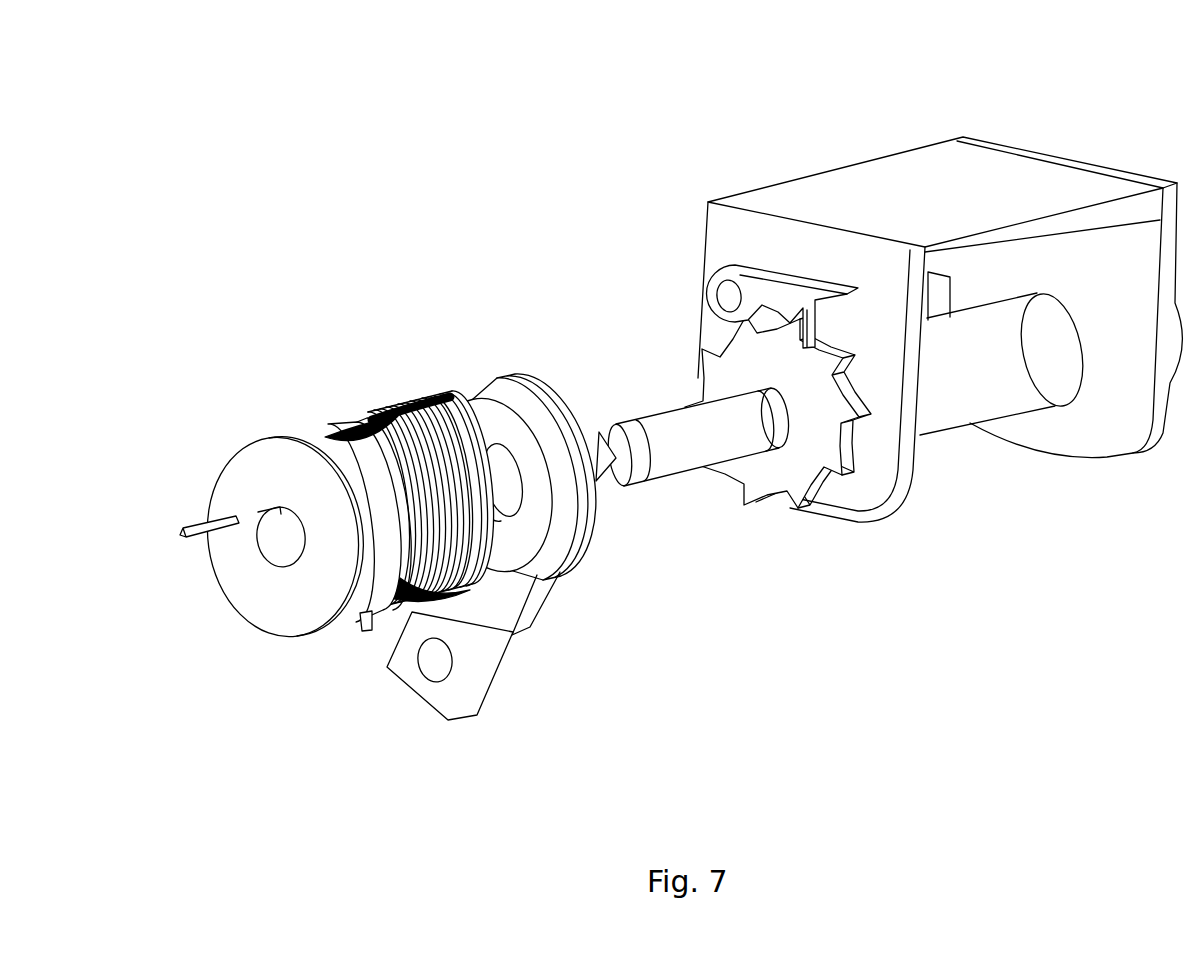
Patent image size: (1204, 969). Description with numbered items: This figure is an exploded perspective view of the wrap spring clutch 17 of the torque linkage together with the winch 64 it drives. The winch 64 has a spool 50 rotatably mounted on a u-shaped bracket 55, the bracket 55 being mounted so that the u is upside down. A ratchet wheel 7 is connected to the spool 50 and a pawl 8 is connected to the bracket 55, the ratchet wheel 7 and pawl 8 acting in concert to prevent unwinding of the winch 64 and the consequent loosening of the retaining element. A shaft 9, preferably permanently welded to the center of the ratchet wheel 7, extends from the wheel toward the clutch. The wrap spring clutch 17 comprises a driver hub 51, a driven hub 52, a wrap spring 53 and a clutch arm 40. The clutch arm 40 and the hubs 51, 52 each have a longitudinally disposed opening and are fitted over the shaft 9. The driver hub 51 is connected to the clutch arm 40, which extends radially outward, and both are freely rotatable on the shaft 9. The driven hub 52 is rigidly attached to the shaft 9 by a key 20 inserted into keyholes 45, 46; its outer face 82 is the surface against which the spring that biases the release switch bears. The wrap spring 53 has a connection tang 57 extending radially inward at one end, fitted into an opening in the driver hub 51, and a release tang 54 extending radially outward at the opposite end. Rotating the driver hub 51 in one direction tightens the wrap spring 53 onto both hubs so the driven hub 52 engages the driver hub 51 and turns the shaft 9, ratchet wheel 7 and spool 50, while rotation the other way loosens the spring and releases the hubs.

The ratchet wheel 7 is at (787, 467).
The pawl 8 is at (770, 292).
The shaft 9 is at (682, 438).
The wrap spring clutch 17 is at (552, 685).
The key 20 is at (202, 540).
The clutch arm 40 is at (477, 683).
The keyhole 45 is at (258, 505).
The keyhole 46 is at (598, 427).
The spool 50 is at (953, 383).
The driver hub 51 is at (510, 400).
The driven hub 52 is at (333, 447).
The wrap spring 53 is at (350, 418).
The release tang 54 is at (369, 631).
The u-shaped bracket 55 is at (998, 183).
The connection tang 57 is at (368, 445).
The winch 64 is at (1025, 495).
The outer face 82 is at (282, 603).